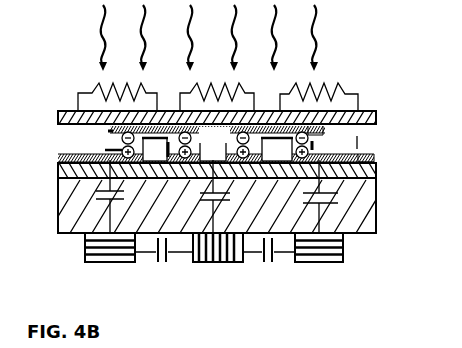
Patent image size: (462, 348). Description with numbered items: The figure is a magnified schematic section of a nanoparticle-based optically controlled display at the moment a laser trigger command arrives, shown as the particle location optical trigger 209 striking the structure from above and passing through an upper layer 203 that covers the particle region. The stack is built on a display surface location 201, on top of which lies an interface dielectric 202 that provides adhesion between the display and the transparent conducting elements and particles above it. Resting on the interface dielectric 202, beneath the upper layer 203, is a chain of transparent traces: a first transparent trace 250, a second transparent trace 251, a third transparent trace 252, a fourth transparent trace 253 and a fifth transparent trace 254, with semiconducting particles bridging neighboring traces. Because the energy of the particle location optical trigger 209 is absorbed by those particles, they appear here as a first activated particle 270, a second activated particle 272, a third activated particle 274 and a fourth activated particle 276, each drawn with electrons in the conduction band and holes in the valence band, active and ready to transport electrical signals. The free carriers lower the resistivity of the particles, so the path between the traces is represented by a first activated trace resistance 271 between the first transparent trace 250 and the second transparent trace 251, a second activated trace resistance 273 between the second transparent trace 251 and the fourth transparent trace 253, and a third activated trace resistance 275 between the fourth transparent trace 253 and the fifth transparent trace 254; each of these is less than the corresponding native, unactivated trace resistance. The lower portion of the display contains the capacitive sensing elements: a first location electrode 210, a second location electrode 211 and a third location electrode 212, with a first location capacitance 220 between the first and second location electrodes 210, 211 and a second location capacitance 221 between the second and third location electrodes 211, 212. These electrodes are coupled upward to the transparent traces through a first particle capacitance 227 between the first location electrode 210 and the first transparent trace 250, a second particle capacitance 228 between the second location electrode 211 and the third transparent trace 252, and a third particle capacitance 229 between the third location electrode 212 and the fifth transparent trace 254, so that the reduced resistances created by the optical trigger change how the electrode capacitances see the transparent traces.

The particle location optical trigger 209 is at (104, 44).
The first activated trace resistance 271 is at (110, 88).
The second activated particle 272 is at (173, 142).
The second activated trace resistance 273 is at (198, 90).
The third activated particle 274 is at (256, 137).
The third activated trace resistance 275 is at (313, 91).
The fourth transparent trace 253 is at (318, 133).
The top substrate layer 203 is at (60, 113).
The second transparent trace 251 is at (108, 132).
The first activated particle 270 is at (112, 149).
The first transparent trace 250 is at (62, 156).
The interface dielectric 202 is at (62, 167).
The display surface location 201 is at (62, 207).
The third transparent trace 252 is at (196, 152).
The fourth activated particle 276 is at (318, 147).
The fifth transparent trace 254 is at (361, 157).
The first particle capacitance 227 is at (100, 204).
The second particle capacitance 228 is at (212, 201).
The third particle capacitance 229 is at (321, 200).
The first location electrode 210 is at (97, 258).
The first location capacitance 220 is at (158, 259).
The second location electrode 211 is at (207, 260).
The second location capacitance 221 is at (263, 258).
The third location electrode 212 is at (314, 258).